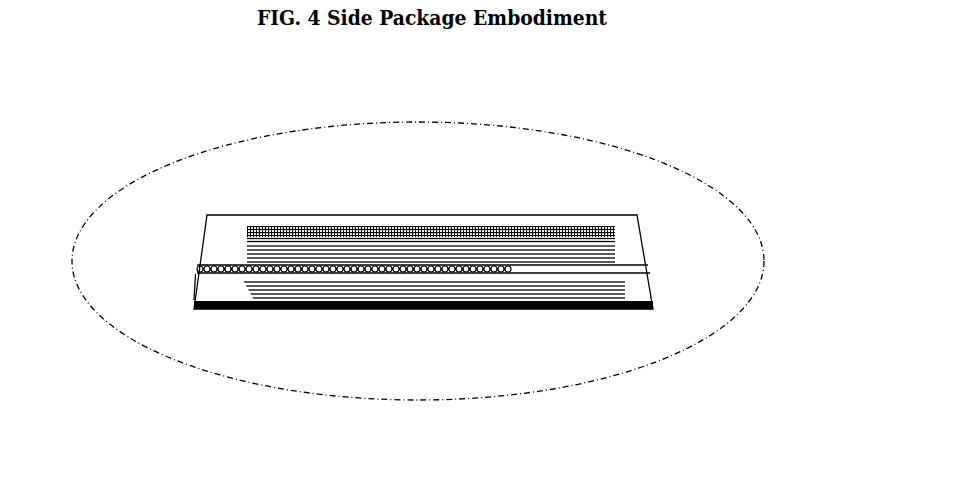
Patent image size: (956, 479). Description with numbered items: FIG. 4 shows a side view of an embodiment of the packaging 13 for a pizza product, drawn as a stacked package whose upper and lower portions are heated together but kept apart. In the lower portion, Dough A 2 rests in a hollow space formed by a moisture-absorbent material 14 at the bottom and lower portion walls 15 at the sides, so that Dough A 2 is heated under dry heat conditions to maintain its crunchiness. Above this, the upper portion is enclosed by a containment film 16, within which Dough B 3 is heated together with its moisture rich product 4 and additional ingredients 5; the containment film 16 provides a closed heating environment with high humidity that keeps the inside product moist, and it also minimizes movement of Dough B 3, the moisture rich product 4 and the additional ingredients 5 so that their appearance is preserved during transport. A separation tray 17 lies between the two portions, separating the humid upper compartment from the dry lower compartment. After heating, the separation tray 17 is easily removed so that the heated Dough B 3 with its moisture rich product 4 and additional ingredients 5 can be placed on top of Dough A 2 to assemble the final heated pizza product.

The packaging 13 is at (601, 128).
The containment film 16 is at (188, 230).
The additional ingredients 5 is at (626, 216).
The moisture rich product 4 is at (627, 235).
The Dough B 3 is at (628, 253).
The separation tray 17 is at (180, 271).
The Dough A 2 is at (632, 293).
The lower portion walls 15 is at (182, 296).
The moisture-absorbent material 14 is at (610, 318).